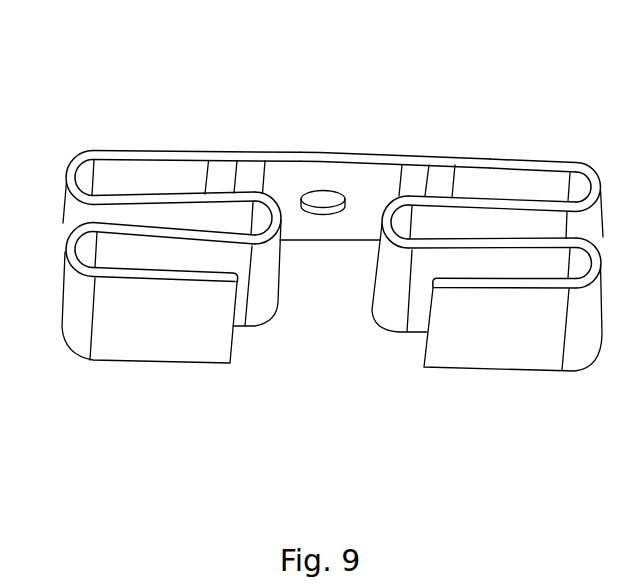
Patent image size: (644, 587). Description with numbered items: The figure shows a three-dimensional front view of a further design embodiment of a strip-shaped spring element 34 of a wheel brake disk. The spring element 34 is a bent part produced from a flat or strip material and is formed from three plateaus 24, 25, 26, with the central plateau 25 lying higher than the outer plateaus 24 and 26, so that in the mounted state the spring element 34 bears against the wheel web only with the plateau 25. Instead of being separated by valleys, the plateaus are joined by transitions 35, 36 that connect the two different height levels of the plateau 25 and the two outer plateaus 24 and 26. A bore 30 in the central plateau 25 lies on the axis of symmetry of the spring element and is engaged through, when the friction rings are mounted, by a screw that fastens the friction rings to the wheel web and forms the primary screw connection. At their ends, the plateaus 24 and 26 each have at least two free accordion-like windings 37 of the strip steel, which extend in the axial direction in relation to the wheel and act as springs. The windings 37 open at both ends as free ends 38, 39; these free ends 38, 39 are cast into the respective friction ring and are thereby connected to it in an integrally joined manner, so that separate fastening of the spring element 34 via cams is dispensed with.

The plateau 24 is at (155, 150).
The plateau 25 is at (365, 152).
The plateau 26 is at (475, 158).
The bore 30 is at (323, 214).
The spring element 34 is at (64, 98).
The transition 35 is at (248, 150).
The transition 36 is at (430, 156).
The accordion-like winding 37 is at (386, 218).
The free end 38 is at (160, 330).
The free end 39 is at (515, 345).